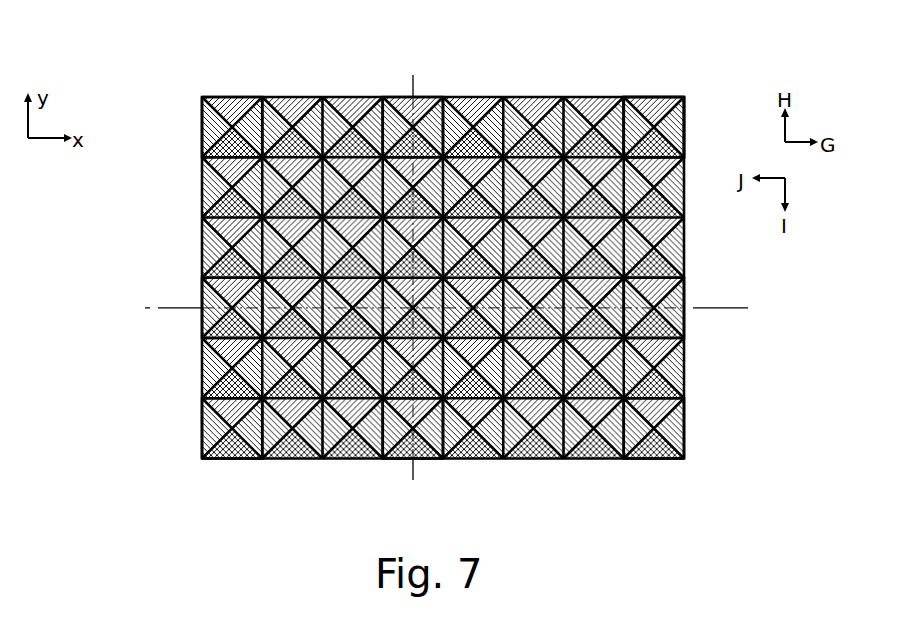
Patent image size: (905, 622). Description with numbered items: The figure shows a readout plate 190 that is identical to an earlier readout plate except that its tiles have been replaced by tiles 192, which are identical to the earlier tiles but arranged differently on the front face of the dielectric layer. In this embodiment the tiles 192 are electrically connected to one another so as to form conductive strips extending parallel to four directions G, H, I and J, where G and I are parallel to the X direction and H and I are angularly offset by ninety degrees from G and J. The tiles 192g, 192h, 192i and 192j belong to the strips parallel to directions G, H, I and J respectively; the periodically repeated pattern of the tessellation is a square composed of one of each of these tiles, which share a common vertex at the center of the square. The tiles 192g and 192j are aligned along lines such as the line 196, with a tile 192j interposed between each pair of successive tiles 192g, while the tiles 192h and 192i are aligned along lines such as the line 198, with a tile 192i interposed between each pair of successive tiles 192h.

The readout plate 190 is at (105, 62).
The tile 192 is at (233, 95).
The tile belonging to conductive strip parallel to direction I 192i is at (401, 103).
The tile belonging to conductive strip parallel to direction J 192j is at (672, 122).
The tile belonging to conductive strip parallel to direction G 192g is at (203, 300).
The tile belonging to conductive strip parallel to direction H 192h is at (428, 458).
The line 198 is at (415, 80).
The line 196 is at (713, 310).